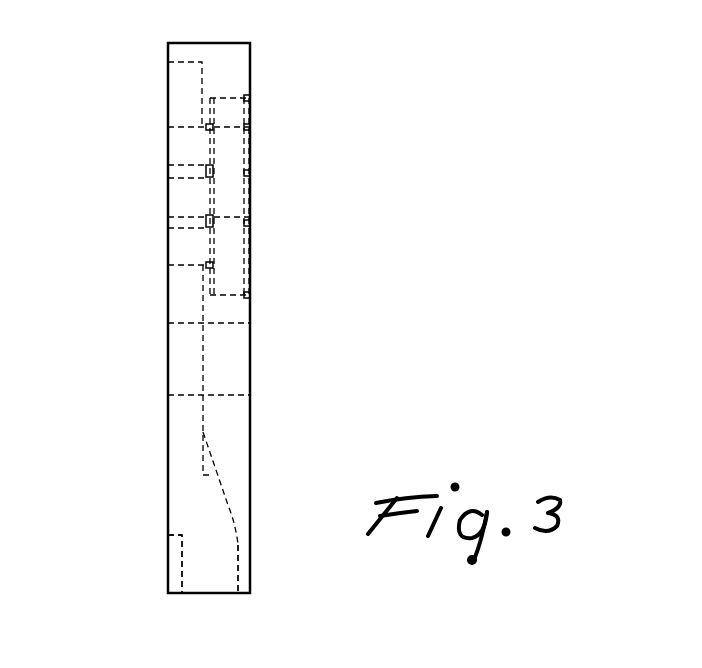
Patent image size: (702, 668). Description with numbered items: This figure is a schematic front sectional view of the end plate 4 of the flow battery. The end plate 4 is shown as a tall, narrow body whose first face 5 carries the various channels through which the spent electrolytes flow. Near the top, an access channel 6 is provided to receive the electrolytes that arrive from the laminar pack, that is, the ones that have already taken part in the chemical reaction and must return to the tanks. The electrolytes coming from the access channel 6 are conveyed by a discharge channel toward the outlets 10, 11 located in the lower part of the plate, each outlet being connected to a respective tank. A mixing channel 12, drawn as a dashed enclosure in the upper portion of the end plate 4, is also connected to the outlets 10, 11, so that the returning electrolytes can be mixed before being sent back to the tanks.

The end plate 4 is at (300, 127).
The first face 5 is at (167, 318).
The access channel 6 is at (183, 90).
The outlet 10 is at (206, 577).
The outlet 11 is at (203, 594).
The mixing channel 12 is at (253, 308).